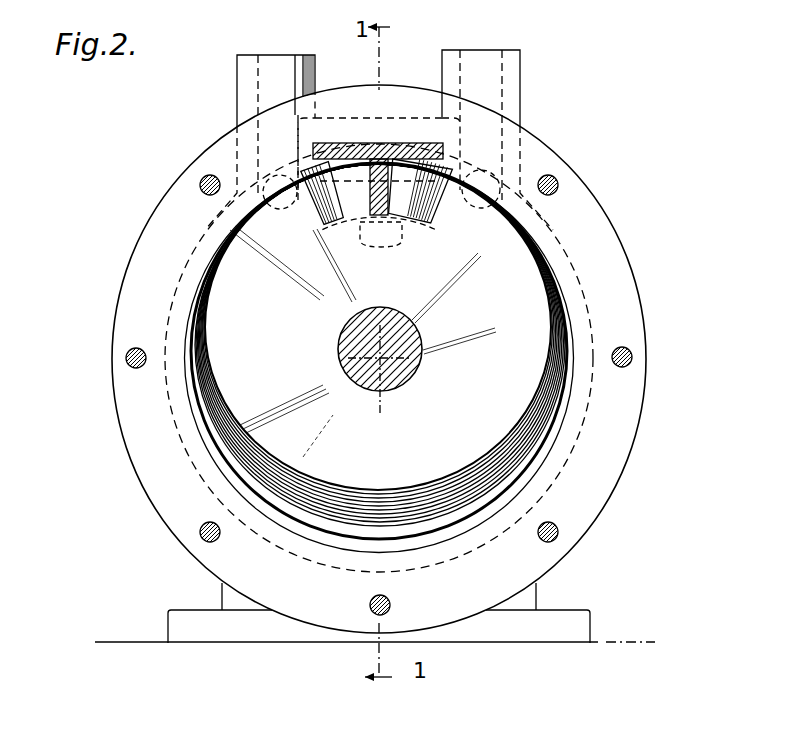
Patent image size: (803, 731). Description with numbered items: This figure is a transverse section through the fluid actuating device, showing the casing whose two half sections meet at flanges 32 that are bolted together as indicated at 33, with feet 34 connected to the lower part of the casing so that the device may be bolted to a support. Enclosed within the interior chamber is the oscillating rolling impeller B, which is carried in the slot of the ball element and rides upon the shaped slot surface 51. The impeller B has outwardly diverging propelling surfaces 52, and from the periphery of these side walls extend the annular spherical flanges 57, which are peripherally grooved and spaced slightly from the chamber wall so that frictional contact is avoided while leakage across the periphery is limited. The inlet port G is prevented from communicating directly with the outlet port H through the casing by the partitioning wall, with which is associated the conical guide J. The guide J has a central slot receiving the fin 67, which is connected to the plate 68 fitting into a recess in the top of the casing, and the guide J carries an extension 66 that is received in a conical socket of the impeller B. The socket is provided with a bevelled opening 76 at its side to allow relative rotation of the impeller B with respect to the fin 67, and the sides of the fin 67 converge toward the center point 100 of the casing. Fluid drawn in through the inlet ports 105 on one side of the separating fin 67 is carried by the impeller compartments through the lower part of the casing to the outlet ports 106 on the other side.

The flanges 32 is at (625, 422).
The bolting 33 is at (126, 357).
The feet 34 is at (185, 612).
The oscillating rolling impeller B is at (520, 250).
The annular spherical flanges 57 is at (332, 497).
The slot surface 51 is at (393, 318).
The center point of the casing 100 is at (377, 358).
The outwardly diverging propelling surfaces 52 is at (255, 375).
The inlet port G is at (255, 87).
The outlet port H is at (504, 80).
The plate 68 is at (387, 142).
The fin 67 is at (368, 197).
The bevelled opening 76 is at (341, 216).
The conical guide J is at (393, 200).
The extension 66 is at (405, 240).
The inlet ports 105 is at (276, 208).
The outlet ports 106 is at (490, 210).